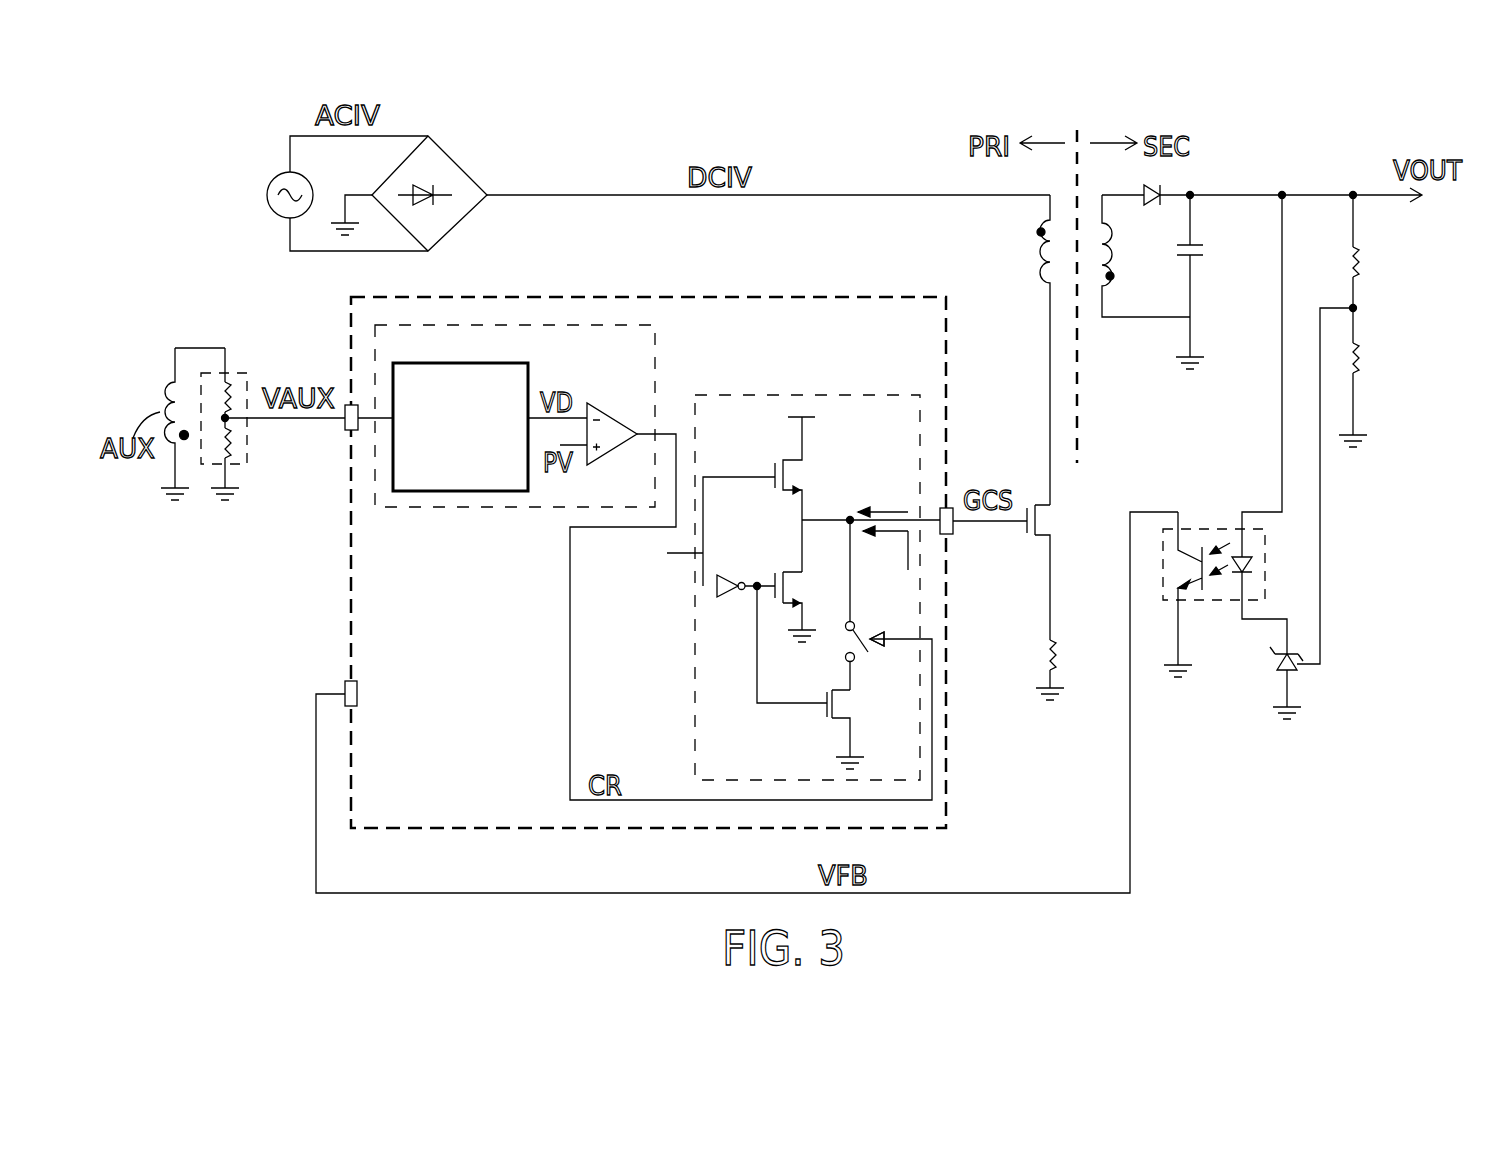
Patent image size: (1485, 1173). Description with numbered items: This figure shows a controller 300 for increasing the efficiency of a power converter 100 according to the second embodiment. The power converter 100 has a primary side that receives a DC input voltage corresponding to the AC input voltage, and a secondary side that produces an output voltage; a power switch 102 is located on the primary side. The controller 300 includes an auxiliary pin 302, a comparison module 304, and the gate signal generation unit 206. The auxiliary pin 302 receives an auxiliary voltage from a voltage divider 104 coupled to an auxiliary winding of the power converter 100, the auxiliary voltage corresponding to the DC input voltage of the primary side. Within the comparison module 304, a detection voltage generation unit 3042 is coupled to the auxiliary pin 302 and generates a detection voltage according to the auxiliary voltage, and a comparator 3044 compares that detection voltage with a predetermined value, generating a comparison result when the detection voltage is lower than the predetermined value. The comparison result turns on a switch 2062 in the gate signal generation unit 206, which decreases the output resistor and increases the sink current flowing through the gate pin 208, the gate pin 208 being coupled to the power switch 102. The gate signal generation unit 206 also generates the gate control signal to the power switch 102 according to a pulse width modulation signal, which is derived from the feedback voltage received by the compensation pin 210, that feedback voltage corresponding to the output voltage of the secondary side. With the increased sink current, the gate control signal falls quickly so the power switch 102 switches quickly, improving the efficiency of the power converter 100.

The power converter 100 is at (1318, 137).
The power switch 102 is at (1048, 520).
The voltage divider 104 is at (235, 372).
The gate signal generation unit 206 is at (778, 587).
The switch 2062 is at (845, 643).
The gate pin 208 is at (955, 530).
The compensation pin 210 is at (343, 685).
The controller 300 is at (688, 290).
The auxiliary pin 302 is at (342, 427).
The comparison module 304 is at (478, 510).
The detection voltage generation unit 3042 is at (497, 363).
The comparator 3044 is at (610, 453).